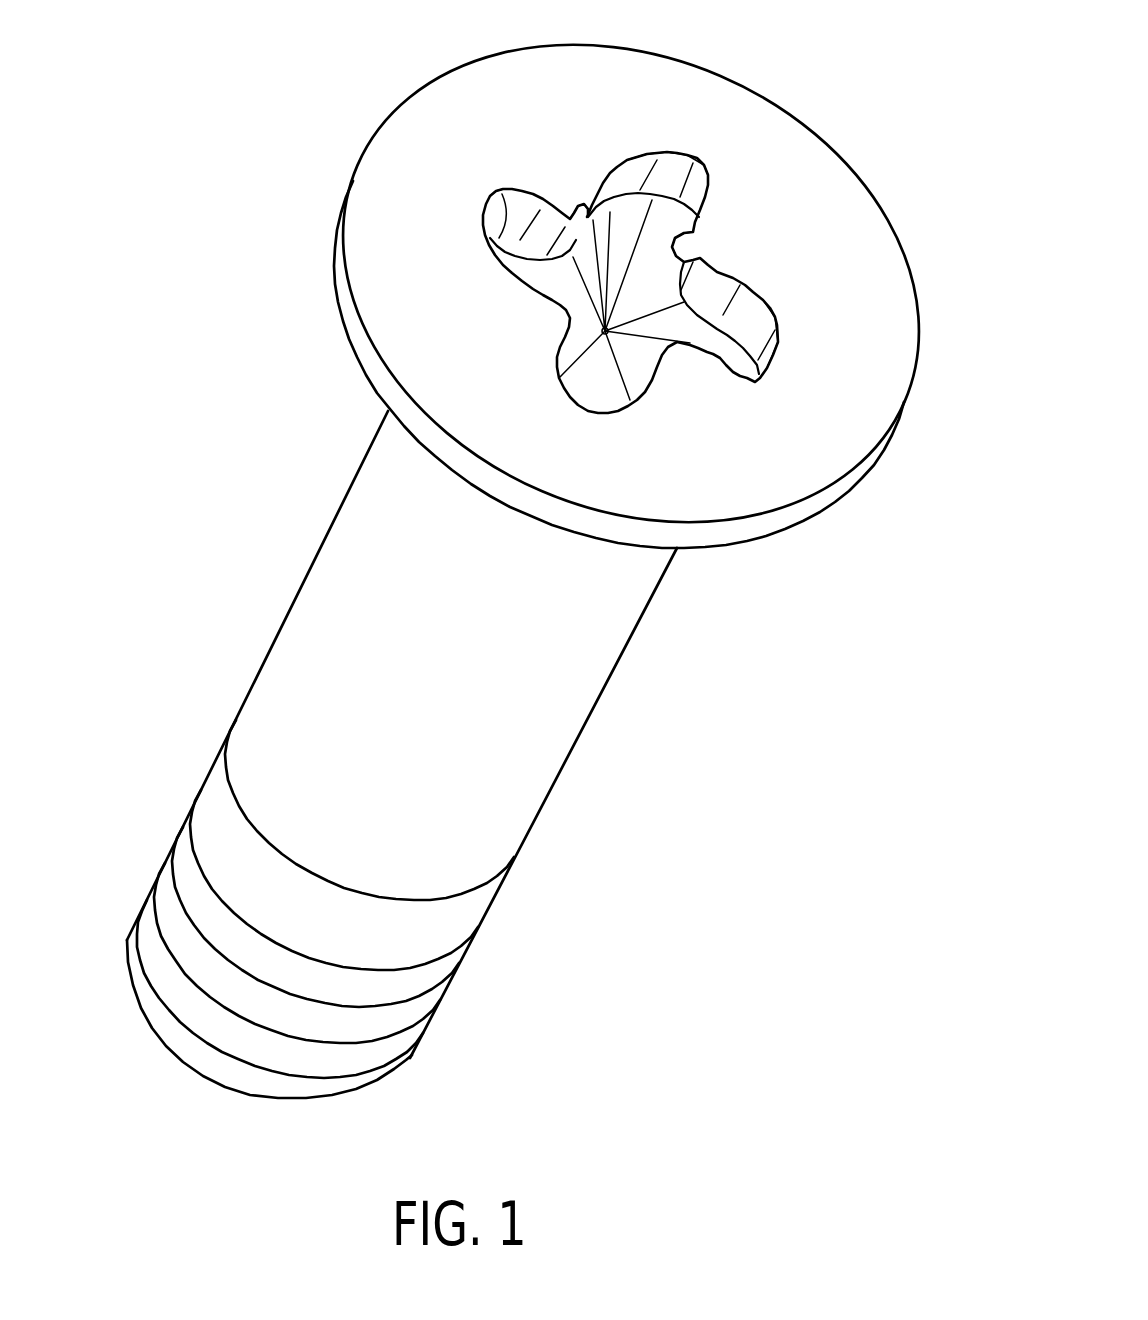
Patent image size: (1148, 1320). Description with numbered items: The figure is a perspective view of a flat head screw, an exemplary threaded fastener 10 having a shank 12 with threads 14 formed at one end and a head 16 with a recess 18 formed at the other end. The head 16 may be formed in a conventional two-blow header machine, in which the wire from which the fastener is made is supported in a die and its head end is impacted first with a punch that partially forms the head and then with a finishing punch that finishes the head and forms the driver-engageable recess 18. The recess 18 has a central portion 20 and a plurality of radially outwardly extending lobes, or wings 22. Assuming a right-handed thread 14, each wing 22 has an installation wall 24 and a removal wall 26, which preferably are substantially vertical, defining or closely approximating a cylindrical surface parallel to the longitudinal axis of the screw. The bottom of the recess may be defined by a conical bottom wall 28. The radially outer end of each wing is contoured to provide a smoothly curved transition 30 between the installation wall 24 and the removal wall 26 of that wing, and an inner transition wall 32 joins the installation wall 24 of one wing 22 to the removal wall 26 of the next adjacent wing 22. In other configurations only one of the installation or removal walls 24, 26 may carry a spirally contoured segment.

The threaded fastener 10 is at (800, 618).
The shank 12 is at (272, 682).
The threads 14 is at (463, 963).
The head 16 is at (367, 222).
The recess 18 is at (567, 350).
The central portion 20 is at (621, 237).
The wings 22 is at (665, 190).
The installation wall 24 is at (497, 190).
The removal wall 26 is at (643, 178).
The conical bottom wall 28 is at (650, 365).
The smoothly curved transition 30 is at (680, 167).
The inner transition wall 32 is at (583, 208).